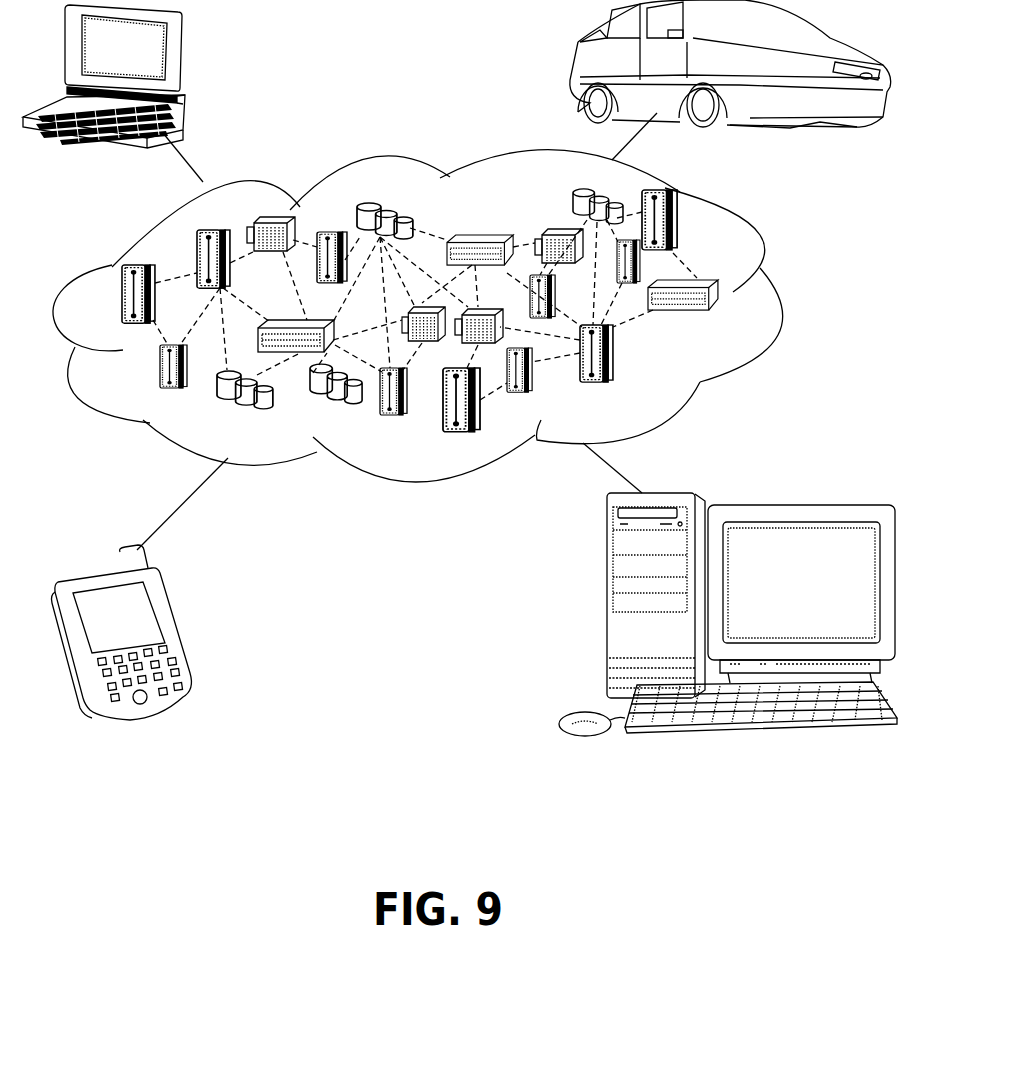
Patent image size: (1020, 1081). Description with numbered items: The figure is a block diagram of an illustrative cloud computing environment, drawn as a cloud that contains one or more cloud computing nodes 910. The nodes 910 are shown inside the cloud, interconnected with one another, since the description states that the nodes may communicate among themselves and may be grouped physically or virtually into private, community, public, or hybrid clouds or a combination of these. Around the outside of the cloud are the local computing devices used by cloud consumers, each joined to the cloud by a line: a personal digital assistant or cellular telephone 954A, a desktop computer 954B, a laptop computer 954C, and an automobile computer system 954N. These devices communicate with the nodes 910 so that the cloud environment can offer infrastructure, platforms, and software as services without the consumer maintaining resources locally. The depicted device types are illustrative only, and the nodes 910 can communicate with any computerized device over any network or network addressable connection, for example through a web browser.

The cloud computing node 910 is at (745, 318).
The personal digital assistant or cellular telephone 954A is at (173, 628).
The desktop computer 954B is at (607, 608).
The laptop computer 954C is at (185, 54).
The automobile computer system 954N is at (578, 55).